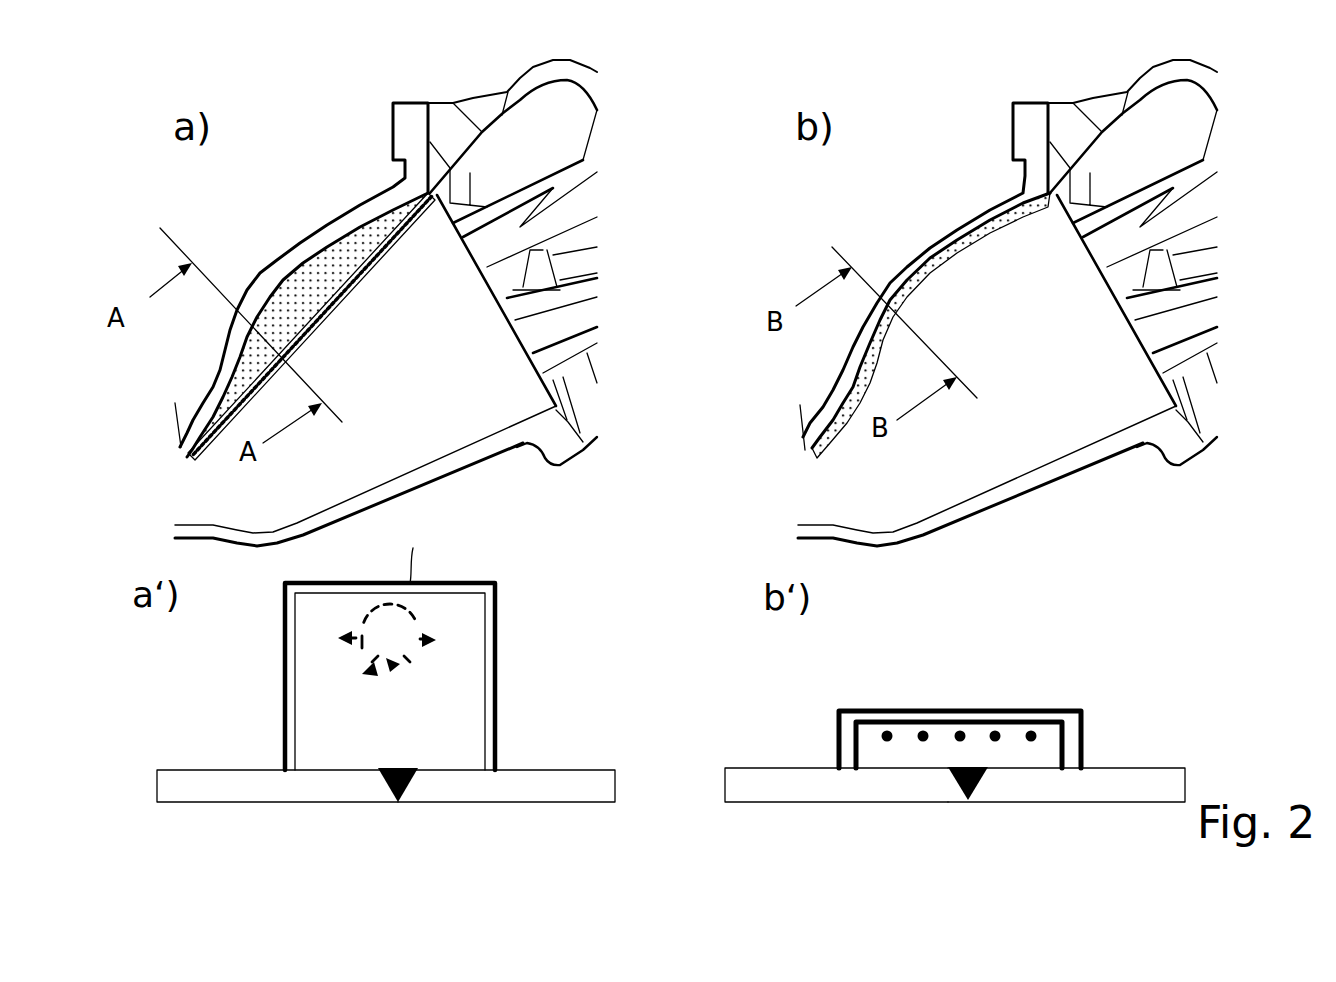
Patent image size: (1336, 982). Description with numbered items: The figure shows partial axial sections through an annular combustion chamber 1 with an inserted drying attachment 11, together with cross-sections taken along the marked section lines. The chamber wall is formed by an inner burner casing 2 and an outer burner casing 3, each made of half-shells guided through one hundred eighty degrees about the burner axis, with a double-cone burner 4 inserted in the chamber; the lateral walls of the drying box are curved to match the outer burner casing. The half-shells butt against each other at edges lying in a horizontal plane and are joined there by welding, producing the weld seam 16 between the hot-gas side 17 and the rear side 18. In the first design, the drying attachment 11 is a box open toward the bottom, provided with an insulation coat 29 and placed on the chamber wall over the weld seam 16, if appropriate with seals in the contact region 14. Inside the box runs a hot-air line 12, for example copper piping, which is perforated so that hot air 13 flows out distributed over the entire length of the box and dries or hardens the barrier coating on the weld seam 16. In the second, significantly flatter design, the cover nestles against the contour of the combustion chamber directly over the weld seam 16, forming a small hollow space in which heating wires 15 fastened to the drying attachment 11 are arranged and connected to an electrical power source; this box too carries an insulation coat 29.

The annular combustion chamber 1 is at (447, 438).
The inner burner casing 2 is at (493, 447).
The outer burner casing 3 is at (302, 244).
The double-cone burner 4 is at (492, 208).
The drying attachment 11 is at (365, 237).
The hot-air line 12 is at (383, 257).
The air flowing out of 12 13 is at (437, 645).
The contact region between 2/3 and 11 14 is at (274, 757).
The heating wires 15 is at (935, 730).
The weld seam 16 is at (408, 787).
The hot-gas side 17 is at (218, 650).
The rear side 18 is at (194, 902).
The insulation coat 29 is at (888, 708).